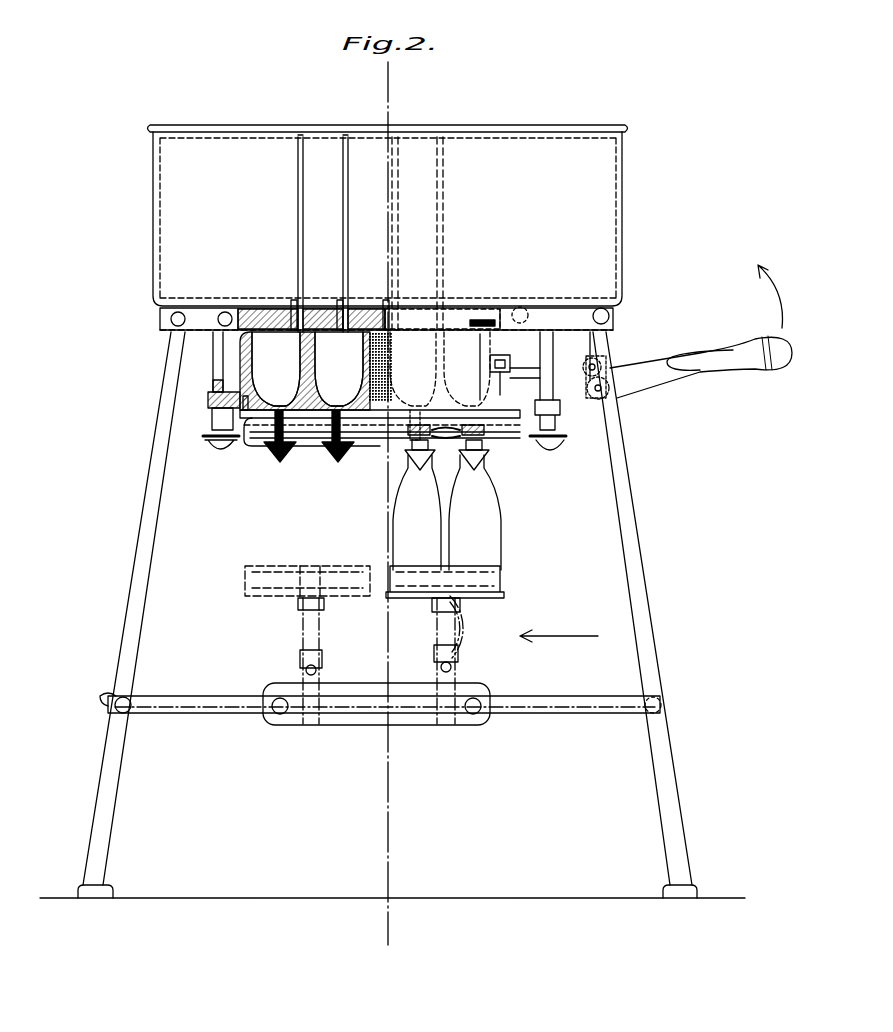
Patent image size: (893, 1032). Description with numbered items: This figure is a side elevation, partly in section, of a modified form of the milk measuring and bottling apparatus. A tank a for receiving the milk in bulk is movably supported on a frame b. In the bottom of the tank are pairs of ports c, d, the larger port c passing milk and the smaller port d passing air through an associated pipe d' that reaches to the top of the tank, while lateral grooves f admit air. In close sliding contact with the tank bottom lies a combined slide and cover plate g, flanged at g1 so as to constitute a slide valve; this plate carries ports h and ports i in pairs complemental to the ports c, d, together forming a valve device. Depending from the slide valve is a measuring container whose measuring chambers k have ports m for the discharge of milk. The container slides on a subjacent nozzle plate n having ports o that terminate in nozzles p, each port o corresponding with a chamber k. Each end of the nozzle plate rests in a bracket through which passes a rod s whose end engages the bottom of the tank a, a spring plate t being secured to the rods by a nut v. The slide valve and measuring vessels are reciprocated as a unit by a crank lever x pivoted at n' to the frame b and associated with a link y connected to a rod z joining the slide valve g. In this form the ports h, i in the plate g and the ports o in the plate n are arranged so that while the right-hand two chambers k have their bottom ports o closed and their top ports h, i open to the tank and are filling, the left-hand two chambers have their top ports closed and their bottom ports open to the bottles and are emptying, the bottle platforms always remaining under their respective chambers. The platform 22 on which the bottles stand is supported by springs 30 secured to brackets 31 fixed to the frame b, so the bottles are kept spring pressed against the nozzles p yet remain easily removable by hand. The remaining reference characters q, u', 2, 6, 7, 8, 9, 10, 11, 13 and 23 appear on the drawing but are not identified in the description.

The tank a is at (168, 262).
The frame b is at (175, 355).
The port c is at (290, 300).
The port d is at (385, 233).
The pipe d' is at (323, 233).
The lateral groove f is at (256, 300).
The combined slide and cover plate g is at (228, 312).
The flange g1 is at (490, 320).
The port h is at (365, 371).
The port i is at (462, 478).
The measuring chamber k is at (374, 354).
The port m is at (296, 405).
The nozzle plate n is at (362, 452).
The pivot n' is at (596, 392).
The port o is at (290, 440).
The nozzle p is at (277, 452).
The bottle q is at (494, 515).
The rod s is at (216, 356).
The spring plate t is at (265, 440).
The nut v is at (218, 456).
The crank lever x is at (652, 370).
The link y is at (590, 386).
The rod z is at (503, 356).
The part 2 is at (322, 456).
The part 6 is at (332, 462).
The part 7 is at (432, 465).
The part 8 is at (406, 462).
The part 9 is at (350, 438).
The part 10 is at (338, 450).
The part 11 is at (332, 450).
The part 13 is at (486, 432).
The platform 22 is at (504, 600).
The tray 23 is at (278, 600).
The spring 30 is at (497, 642).
The bracket 31 is at (452, 668).
The cross bar u' is at (380, 661).